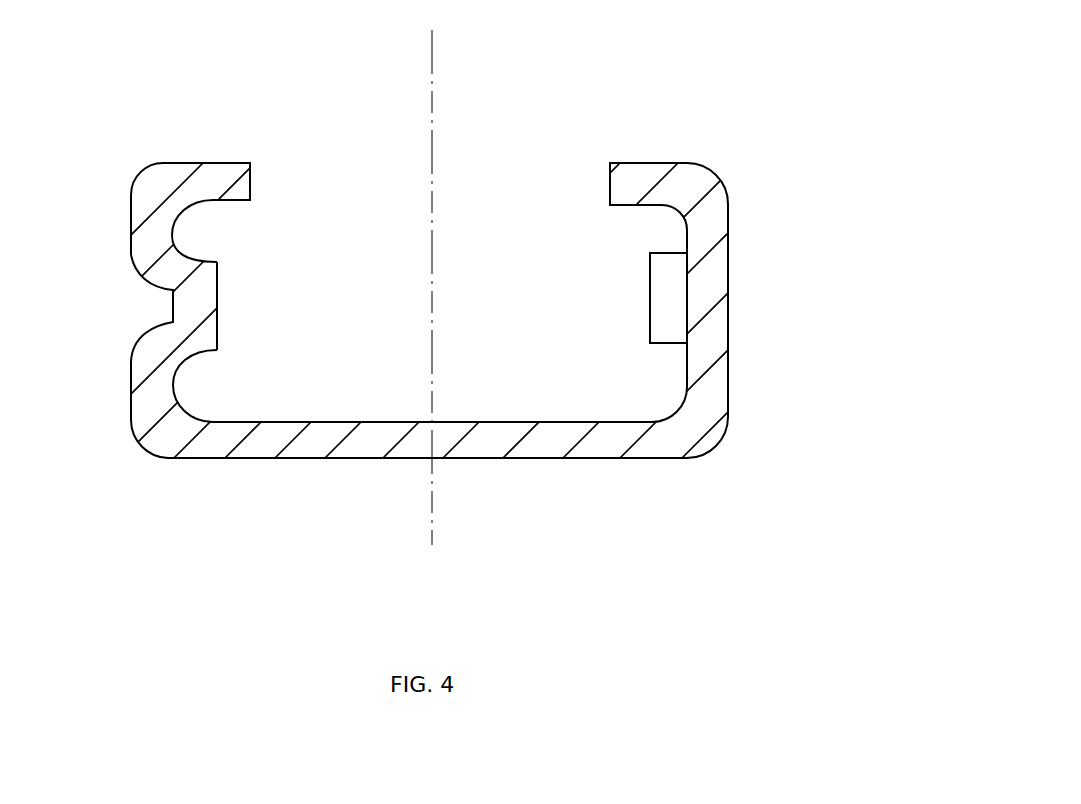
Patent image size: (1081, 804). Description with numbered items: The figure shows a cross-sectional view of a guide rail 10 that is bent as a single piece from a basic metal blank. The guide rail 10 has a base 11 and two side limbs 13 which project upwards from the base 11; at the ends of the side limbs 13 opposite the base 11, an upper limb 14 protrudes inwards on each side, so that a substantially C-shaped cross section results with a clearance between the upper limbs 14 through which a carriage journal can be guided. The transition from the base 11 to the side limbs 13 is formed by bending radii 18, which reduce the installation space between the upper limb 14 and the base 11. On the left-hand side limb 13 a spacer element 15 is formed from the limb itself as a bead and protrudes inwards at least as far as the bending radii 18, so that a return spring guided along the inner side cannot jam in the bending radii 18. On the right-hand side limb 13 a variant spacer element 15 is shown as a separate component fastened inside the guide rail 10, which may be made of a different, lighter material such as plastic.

The guide rail 10 is at (806, 362).
The base 11 is at (577, 452).
The side limb 13 is at (148, 235).
The upper limb 14 is at (233, 180).
The spacer element 15 is at (210, 313).
The bending radius 18 is at (183, 222).